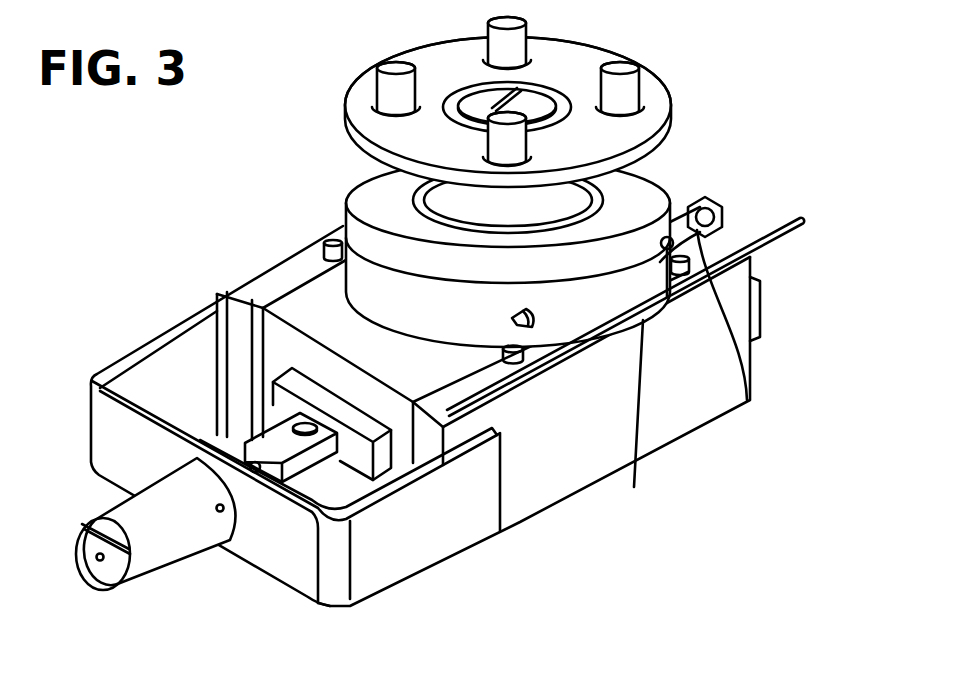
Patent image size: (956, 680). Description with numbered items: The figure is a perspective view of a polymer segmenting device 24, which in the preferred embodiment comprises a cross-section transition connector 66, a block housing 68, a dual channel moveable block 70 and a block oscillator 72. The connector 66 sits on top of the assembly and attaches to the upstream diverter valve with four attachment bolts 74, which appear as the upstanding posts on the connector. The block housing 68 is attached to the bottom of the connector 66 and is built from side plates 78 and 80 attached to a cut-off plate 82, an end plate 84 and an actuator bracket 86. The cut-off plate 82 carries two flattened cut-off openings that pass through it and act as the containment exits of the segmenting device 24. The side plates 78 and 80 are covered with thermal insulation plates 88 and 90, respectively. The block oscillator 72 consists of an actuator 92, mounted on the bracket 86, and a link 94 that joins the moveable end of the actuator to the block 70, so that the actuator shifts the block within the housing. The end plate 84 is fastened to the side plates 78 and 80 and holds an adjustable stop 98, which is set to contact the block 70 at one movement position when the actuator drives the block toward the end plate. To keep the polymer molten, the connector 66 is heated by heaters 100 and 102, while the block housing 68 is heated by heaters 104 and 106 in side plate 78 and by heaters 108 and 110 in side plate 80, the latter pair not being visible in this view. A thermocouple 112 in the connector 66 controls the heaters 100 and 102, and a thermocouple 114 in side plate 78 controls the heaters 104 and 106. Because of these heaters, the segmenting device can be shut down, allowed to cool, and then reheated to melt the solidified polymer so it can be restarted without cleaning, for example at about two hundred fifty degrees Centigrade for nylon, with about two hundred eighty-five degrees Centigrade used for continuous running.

The segmenting device 24 is at (787, 394).
The cross-section transition connector 66 is at (593, 45).
The block housing 68 is at (678, 440).
The dual channel moveable block 70 is at (300, 300).
The block oscillator 72 is at (208, 550).
The attachment bolts 74 is at (624, 68).
The side plate 78 is at (722, 246).
The side plate 80 is at (252, 282).
The cut-off plate 82 is at (293, 503).
The end plate 84 is at (692, 197).
The actuator bracket 86 is at (388, 584).
The thermal insulation plate 88 is at (735, 288).
The thermal insulation plate 90 is at (328, 240).
The actuator 92 is at (107, 509).
The link 94 is at (262, 443).
The adjustable stop 98 is at (716, 205).
The heater 100 is at (722, 277).
The heater 102 is at (535, 327).
The heater 104 is at (727, 323).
The heater 106 is at (518, 362).
The heater 108 is at (333, 240).
The heater 110 is at (413, 47).
The thermocouple 112 is at (634, 487).
The thermocouple 114 is at (800, 224).